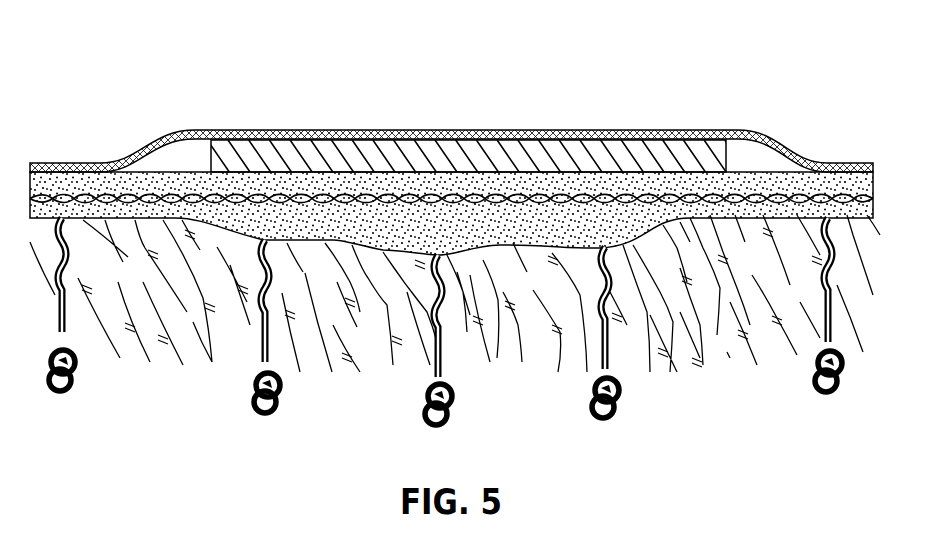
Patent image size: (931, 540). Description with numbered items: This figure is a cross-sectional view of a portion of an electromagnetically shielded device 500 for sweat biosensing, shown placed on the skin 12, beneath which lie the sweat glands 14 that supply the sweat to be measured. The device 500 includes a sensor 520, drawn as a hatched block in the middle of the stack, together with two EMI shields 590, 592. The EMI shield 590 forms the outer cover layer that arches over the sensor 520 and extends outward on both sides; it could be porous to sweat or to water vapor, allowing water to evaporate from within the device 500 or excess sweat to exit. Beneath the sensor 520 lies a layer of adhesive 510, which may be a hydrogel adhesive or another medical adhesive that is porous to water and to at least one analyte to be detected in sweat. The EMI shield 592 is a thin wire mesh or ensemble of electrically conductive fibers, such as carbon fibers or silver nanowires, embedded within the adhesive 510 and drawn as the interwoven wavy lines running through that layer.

The device 500 is at (104, 66).
The adhesive 510 is at (758, 183).
The sensor 520 is at (412, 147).
The EMI shield 590 is at (637, 130).
The EMI shield 592 is at (198, 193).
The skin 12 is at (710, 332).
The sweat glands 14 is at (78, 378).